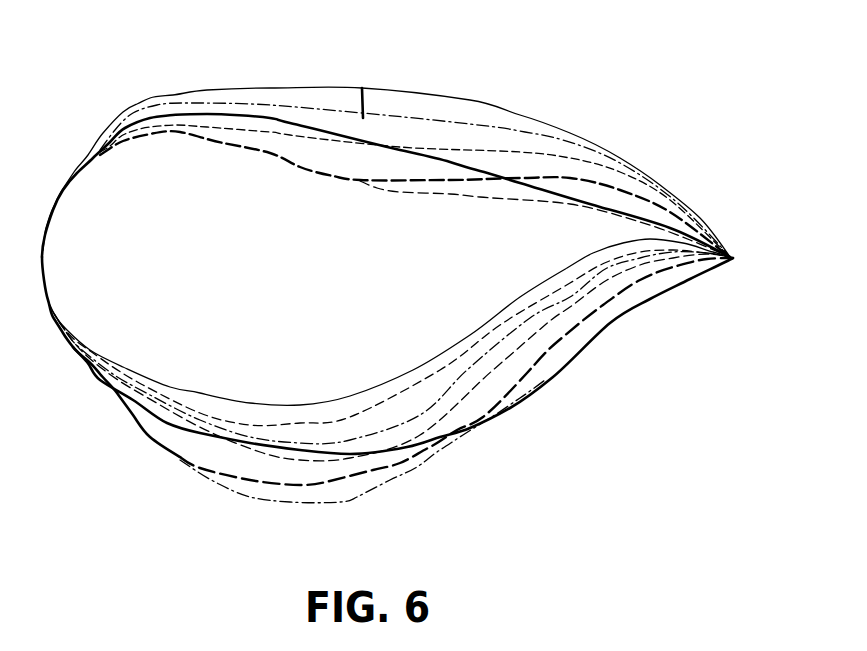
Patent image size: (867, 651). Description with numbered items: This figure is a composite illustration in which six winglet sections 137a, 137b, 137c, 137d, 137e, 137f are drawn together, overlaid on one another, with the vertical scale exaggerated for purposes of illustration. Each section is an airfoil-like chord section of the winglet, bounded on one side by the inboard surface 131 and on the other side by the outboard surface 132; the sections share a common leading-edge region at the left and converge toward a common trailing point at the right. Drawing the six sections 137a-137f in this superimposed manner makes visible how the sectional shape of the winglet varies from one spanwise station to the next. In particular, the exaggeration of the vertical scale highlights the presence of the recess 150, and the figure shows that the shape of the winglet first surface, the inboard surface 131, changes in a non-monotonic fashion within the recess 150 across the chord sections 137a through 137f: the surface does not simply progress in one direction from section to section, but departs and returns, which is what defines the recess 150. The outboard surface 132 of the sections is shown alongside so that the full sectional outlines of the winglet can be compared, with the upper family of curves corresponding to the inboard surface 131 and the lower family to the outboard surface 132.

The inboard surface 131 is at (210, 90).
The outboard surface 132 is at (187, 467).
The recess 150 is at (362, 88).
The winglet section 137a is at (553, 380).
The winglet section 137b is at (603, 307).
The winglet section 137c is at (655, 268).
The winglet section 137d is at (623, 178).
The winglet section 137e is at (565, 140).
The winglet section 137f is at (472, 100).